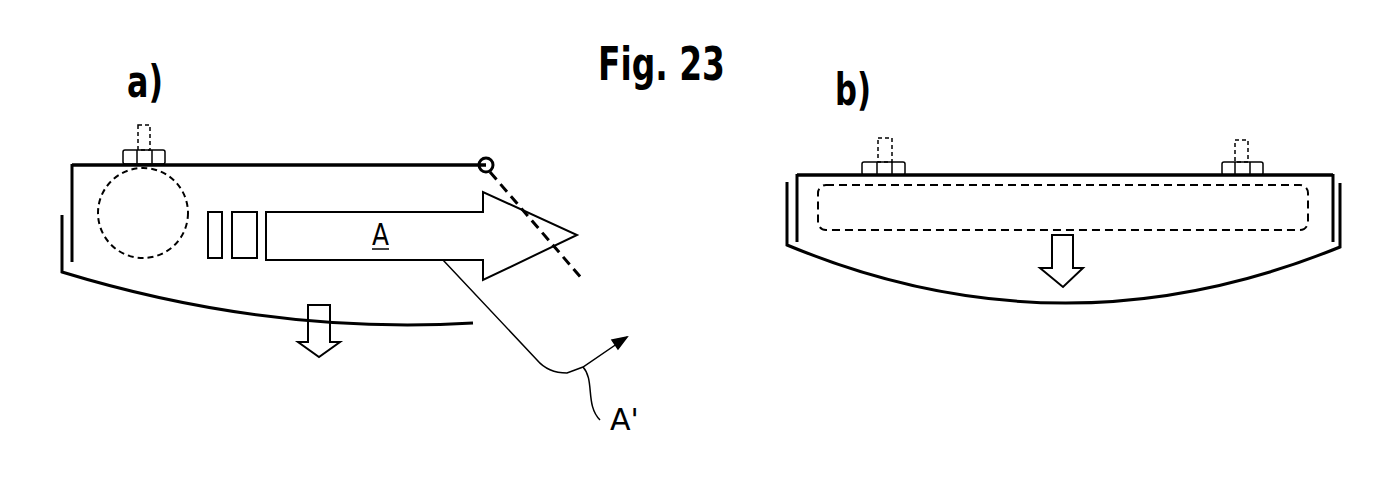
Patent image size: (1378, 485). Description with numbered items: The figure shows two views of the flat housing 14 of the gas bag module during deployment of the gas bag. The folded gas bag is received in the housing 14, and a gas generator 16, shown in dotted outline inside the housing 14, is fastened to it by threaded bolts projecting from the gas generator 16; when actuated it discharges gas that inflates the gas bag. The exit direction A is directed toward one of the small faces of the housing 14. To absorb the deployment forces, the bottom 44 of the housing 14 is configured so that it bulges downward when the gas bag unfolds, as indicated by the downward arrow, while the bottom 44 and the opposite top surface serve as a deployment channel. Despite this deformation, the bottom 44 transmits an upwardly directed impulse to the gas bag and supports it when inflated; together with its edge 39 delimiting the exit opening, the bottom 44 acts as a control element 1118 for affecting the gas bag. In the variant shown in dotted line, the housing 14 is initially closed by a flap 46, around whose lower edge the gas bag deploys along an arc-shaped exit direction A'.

The housing 14 is at (343, 163).
The gas generator 16 is at (125, 196).
The flap 46 is at (512, 195).
The bottom 44 is at (701, 292).
The control element 1118 is at (202, 308).
The edge 39 is at (701, 292).